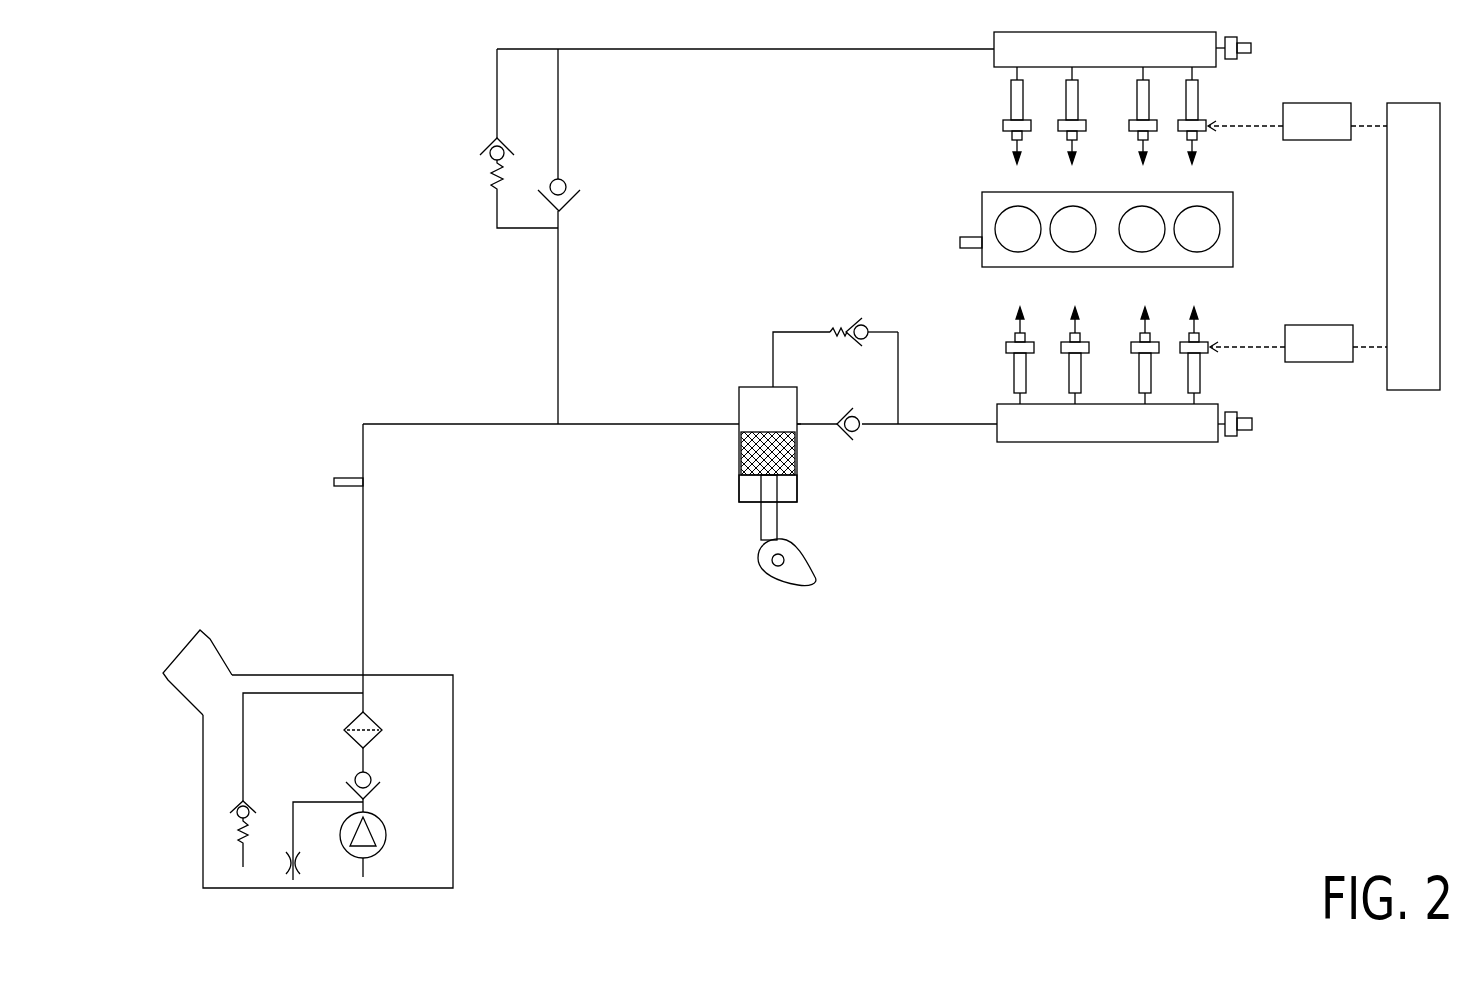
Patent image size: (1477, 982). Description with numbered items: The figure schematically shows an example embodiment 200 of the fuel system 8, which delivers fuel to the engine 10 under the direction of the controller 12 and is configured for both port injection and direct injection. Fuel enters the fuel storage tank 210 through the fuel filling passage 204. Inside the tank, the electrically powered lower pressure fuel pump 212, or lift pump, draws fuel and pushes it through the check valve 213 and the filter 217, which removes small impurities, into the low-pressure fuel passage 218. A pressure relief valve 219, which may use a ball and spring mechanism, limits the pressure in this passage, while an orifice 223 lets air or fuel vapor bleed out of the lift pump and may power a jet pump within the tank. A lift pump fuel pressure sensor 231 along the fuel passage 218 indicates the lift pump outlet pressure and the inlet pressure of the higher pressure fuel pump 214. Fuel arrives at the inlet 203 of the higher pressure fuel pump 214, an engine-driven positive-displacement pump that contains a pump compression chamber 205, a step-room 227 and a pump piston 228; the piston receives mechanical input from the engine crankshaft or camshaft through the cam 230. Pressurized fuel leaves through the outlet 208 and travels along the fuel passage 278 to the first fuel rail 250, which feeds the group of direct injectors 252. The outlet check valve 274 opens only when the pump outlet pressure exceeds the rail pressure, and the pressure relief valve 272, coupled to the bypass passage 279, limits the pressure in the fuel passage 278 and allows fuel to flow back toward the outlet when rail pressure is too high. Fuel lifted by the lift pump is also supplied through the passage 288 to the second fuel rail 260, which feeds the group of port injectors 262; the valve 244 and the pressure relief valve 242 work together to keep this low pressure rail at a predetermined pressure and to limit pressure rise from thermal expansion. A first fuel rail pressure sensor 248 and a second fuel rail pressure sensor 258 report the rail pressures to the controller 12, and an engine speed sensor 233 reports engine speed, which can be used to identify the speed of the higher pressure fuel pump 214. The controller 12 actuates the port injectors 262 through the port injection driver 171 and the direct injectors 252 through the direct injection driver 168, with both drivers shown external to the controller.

The fuel system 8 is at (340, 352).
The engine 10 is at (1233, 232).
The controller 12 is at (1424, 259).
The direct injection driver 168 is at (1335, 359).
The port injection driver 171 is at (1333, 138).
The example embodiment of fuel system 200 is at (163, 87).
The inlet of HPP 203 is at (735, 424).
The fuel filling passage 204 is at (220, 658).
The pump compression chamber 205 is at (780, 412).
The outlet of HPP 208 is at (800, 422).
The fuel storage tank 210 is at (453, 800).
The lower pressure fuel pump 212 is at (387, 842).
The check valve 213 is at (373, 773).
The higher pressure fuel pump 214 is at (752, 387).
The filter 217 is at (373, 720).
The fuel passage 218 is at (363, 642).
The pressure relief valve 219 is at (230, 835).
The orifice 223 is at (287, 863).
The step-room 227 is at (750, 495).
The pump piston 228 is at (783, 478).
The cam 230 is at (813, 578).
The lift pump fuel pressure sensor 231 is at (350, 478).
The engine speed sensor 233 is at (978, 238).
The pressure relief valve 242 is at (488, 138).
The valve 244 is at (565, 177).
The first fuel rail pressure sensor 248 is at (1253, 423).
The first fuel rail 250 is at (1207, 404).
The direct injectors 252 is at (1131, 342).
The second fuel rail pressure sensor 258 is at (1251, 50).
The second fuel rail 260 is at (1207, 67).
The port injectors 262 is at (1129, 129).
The pressure relief valve 272 is at (838, 327).
The outlet check valve 274 is at (838, 406).
The fuel passage 278 is at (925, 424).
The bypass passage 279 is at (797, 332).
The high pressure fuel passage 288 is at (695, 49).